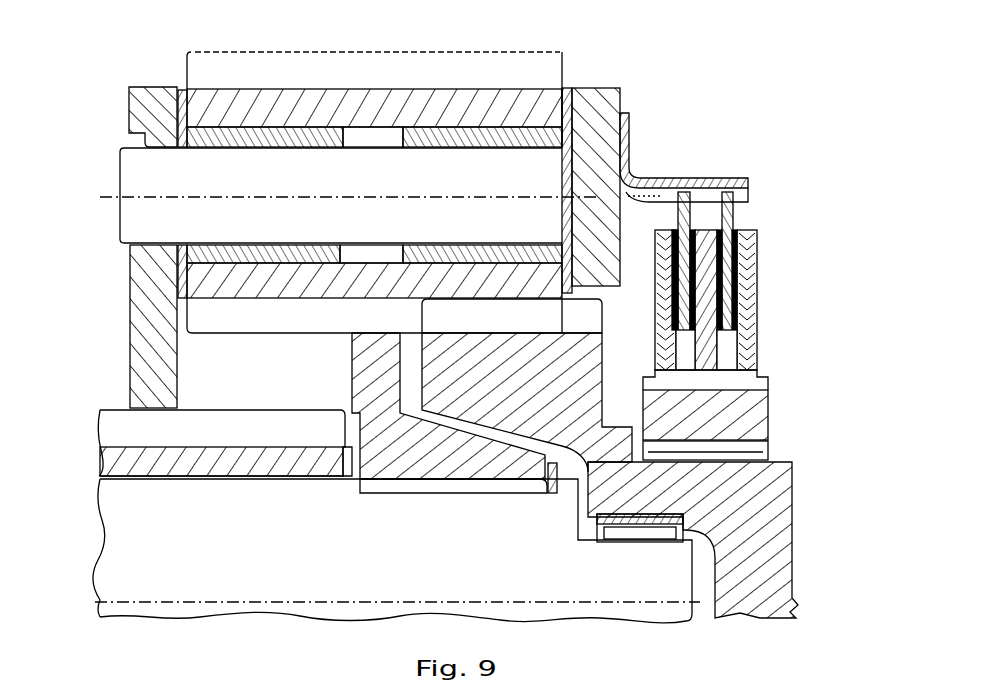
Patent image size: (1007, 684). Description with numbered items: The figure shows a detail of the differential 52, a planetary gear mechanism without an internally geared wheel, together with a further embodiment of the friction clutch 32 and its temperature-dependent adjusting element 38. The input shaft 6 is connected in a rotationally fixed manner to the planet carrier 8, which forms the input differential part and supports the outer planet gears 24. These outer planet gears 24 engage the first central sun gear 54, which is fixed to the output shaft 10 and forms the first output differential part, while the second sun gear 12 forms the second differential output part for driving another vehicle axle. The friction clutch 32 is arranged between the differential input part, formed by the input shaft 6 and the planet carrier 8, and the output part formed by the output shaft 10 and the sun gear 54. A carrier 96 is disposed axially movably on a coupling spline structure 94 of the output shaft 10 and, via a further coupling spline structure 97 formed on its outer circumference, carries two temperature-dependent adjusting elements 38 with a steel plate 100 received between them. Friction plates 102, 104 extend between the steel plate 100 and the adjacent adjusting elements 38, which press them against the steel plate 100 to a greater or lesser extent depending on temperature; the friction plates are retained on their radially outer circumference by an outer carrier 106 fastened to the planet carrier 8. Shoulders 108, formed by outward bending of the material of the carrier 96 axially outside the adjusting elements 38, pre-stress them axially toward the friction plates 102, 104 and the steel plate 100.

The differential 52 is at (128, 78).
The outer planet gears 24 is at (528, 92).
The planet carrier 8 is at (567, 88).
The first central sun gear 54 is at (598, 341).
The outer carrier 106 is at (689, 178).
The friction clutch 32 is at (729, 297).
The temperature-dependent adjusting element 38 is at (758, 245).
The steel plate 100 is at (708, 352).
The friction plate 102 is at (678, 218).
The friction plate 104 is at (735, 214).
The further coupling spline structure 97 is at (748, 362).
The shoulders 108 is at (768, 378).
The carrier 96 is at (770, 428).
The coupling spline structure 94 is at (748, 452).
The output shaft 10 is at (782, 528).
The input shaft 6 is at (115, 535).
The second sun gear 12 is at (120, 425).